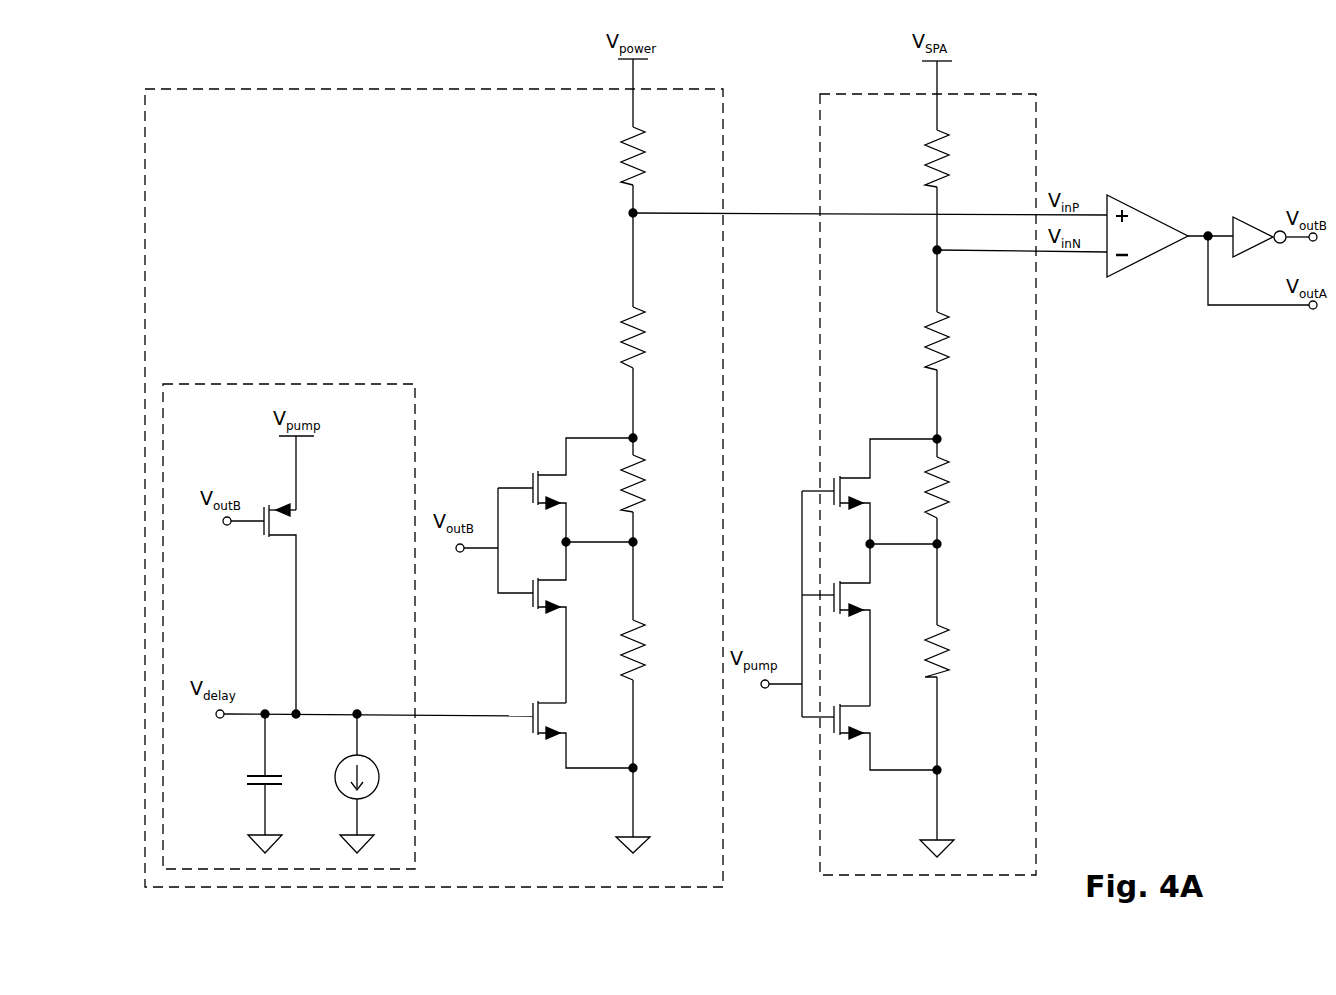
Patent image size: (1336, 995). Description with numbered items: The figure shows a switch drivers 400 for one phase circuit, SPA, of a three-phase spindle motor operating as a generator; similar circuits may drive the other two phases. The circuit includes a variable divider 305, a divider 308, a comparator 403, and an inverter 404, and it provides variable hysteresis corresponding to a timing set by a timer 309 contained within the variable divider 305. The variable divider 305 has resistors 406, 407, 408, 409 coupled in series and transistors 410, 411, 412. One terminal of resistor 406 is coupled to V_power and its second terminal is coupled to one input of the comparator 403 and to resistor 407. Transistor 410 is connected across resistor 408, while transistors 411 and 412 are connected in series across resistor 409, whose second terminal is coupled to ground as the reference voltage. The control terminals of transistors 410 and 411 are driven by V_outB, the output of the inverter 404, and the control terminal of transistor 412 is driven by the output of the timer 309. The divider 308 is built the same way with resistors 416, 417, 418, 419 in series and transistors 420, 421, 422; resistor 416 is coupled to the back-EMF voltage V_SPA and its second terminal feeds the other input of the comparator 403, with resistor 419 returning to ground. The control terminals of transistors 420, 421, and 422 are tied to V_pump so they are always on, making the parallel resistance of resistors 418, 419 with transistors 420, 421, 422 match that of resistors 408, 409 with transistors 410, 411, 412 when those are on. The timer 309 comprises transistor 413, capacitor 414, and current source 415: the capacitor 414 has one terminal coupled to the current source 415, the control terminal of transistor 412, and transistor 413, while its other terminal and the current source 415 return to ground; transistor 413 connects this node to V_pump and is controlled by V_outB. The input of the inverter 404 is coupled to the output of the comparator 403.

The variable divider 305 is at (387, 89).
The divider 308 is at (866, 94).
The timer 309 is at (232, 384).
The switch drivers 400 is at (1222, 92).
The comparator 403 is at (1137, 203).
The inverter 404 is at (1248, 216).
The resistor 406 is at (621, 168).
The resistor 407 is at (621, 334).
The resistor 408 is at (647, 512).
The resistor 409 is at (647, 680).
The transistor 410 is at (522, 478).
The transistor 411 is at (527, 604).
The transistor 412 is at (527, 704).
The transistor 413 is at (257, 540).
The capacitor 414 is at (243, 776).
The current source 415 is at (379, 792).
The resistor 416 is at (921, 151).
The resistor 417 is at (921, 334).
The resistor 418 is at (951, 515).
The resistor 419 is at (951, 677).
The transistor 420 is at (829, 480).
The transistor 421 is at (830, 612).
The transistor 422 is at (830, 731).